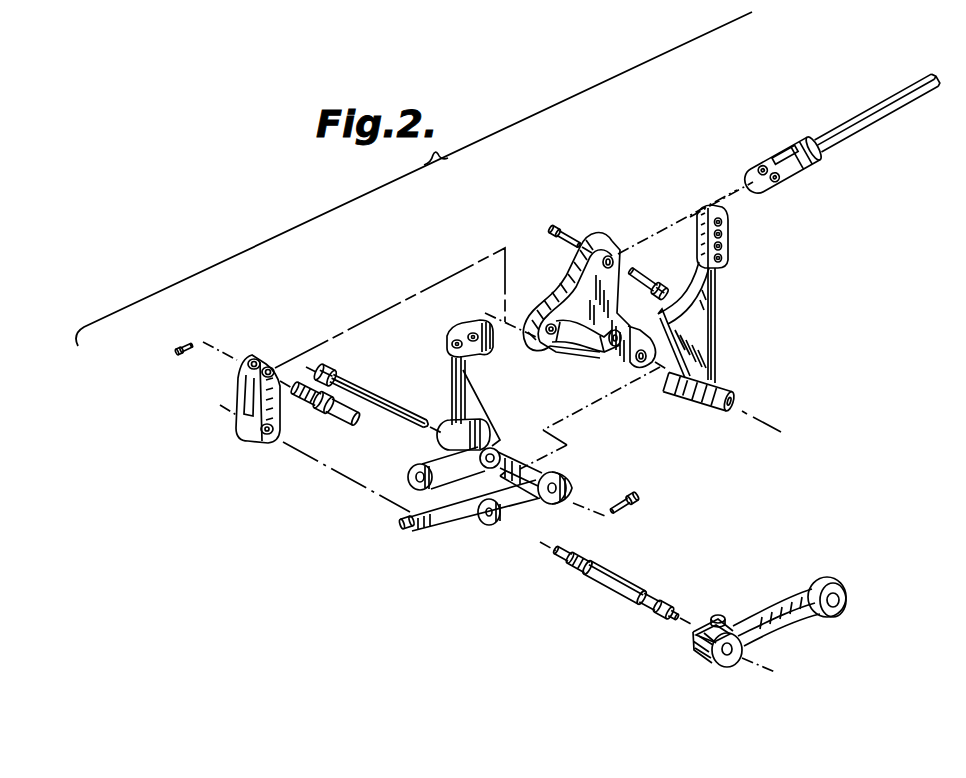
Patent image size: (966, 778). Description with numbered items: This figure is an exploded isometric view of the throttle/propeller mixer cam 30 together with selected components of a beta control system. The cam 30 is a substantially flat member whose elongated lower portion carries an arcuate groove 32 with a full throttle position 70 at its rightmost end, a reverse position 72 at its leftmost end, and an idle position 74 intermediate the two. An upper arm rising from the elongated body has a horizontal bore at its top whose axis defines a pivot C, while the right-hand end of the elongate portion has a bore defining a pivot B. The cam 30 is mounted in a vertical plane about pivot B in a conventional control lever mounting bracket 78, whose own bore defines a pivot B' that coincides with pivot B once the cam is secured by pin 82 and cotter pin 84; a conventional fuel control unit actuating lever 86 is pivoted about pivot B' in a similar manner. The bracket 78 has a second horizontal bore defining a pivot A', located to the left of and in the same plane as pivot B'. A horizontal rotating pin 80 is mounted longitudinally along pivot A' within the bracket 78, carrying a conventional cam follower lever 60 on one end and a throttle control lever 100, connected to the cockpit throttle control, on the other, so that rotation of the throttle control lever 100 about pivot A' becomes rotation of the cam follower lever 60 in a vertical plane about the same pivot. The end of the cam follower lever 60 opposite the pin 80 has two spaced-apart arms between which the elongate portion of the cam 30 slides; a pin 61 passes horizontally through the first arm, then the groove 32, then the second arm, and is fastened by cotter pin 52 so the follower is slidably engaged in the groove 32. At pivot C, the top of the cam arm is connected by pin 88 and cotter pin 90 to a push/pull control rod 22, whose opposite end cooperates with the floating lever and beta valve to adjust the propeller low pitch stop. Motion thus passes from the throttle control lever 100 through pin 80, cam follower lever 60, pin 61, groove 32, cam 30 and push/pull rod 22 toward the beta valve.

The push/pull control rod 22 is at (836, 130).
The throttle/propeller mixer cam 30 is at (603, 242).
The arcuate groove 32 is at (606, 341).
The cotter pin 52 is at (182, 348).
The cam follower lever 60 is at (239, 381).
The pin 61 is at (347, 424).
The full throttle position 70 is at (610, 340).
The reverse position 72 is at (551, 322).
The idle position 74 is at (557, 343).
The control lever mounting bracket 78 is at (540, 510).
The rotating pin 80 is at (666, 611).
The pin 82 is at (371, 389).
The cotter pin 84 is at (636, 508).
The fuel control unit actuating lever 86 is at (722, 203).
The pin 88 is at (651, 274).
The cotter pin 90 is at (552, 230).
The throttle control lever 100 is at (773, 604).
The pivot A' is at (482, 538).
The pivot B' is at (576, 474).
The pivot B is at (637, 391).
The pivot C is at (612, 254).